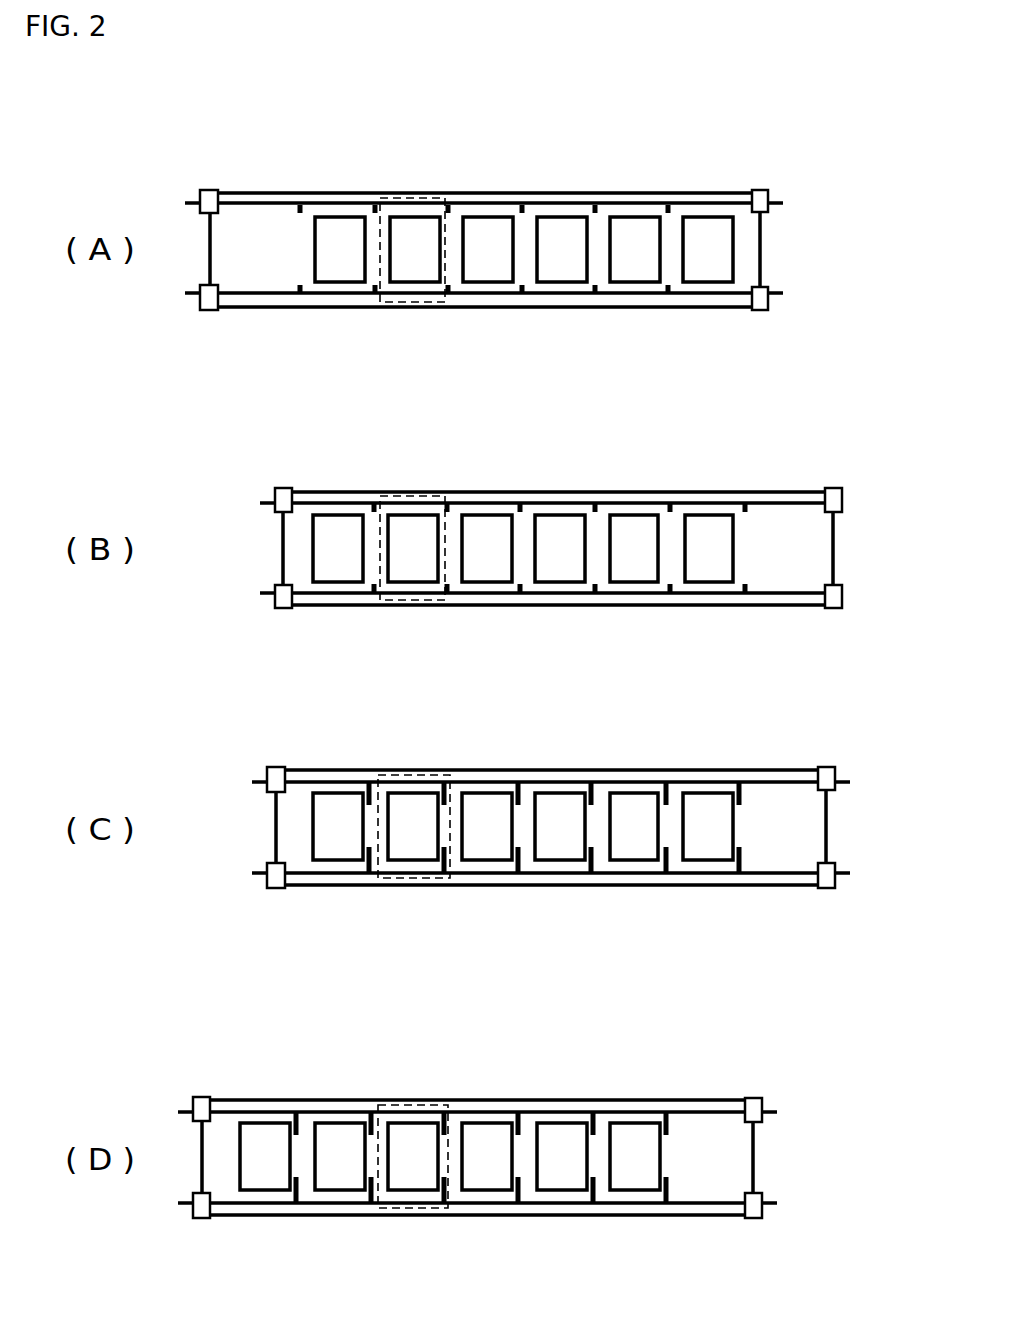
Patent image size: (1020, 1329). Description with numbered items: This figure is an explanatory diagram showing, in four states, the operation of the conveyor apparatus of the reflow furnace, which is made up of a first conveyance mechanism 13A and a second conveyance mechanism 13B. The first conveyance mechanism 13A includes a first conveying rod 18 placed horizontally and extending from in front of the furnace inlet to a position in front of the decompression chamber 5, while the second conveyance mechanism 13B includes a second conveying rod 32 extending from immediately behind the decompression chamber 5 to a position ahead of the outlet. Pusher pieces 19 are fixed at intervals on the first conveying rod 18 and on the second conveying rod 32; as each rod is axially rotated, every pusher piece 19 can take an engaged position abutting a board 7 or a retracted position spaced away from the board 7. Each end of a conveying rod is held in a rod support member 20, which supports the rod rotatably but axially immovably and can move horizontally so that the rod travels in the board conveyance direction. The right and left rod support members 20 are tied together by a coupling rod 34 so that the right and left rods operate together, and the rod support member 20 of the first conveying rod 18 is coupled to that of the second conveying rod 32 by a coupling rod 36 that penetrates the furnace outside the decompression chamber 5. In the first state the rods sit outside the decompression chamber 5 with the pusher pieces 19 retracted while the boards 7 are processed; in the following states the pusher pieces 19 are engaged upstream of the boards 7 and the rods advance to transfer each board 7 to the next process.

The decompression chamber 5 is at (398, 198).
The board 7 is at (490, 203).
The first conveyance mechanism 13A is at (705, 192).
The second conveyance mechanism 13B is at (262, 192).
The first conveying rod 18 is at (560, 203).
The pusher piece 19 is at (360, 203).
The rod support member 20 is at (206, 190).
The second conveying rod 32 is at (322, 193).
The coupling rod 34 is at (207, 257).
The coupling rod 36 is at (623, 193).